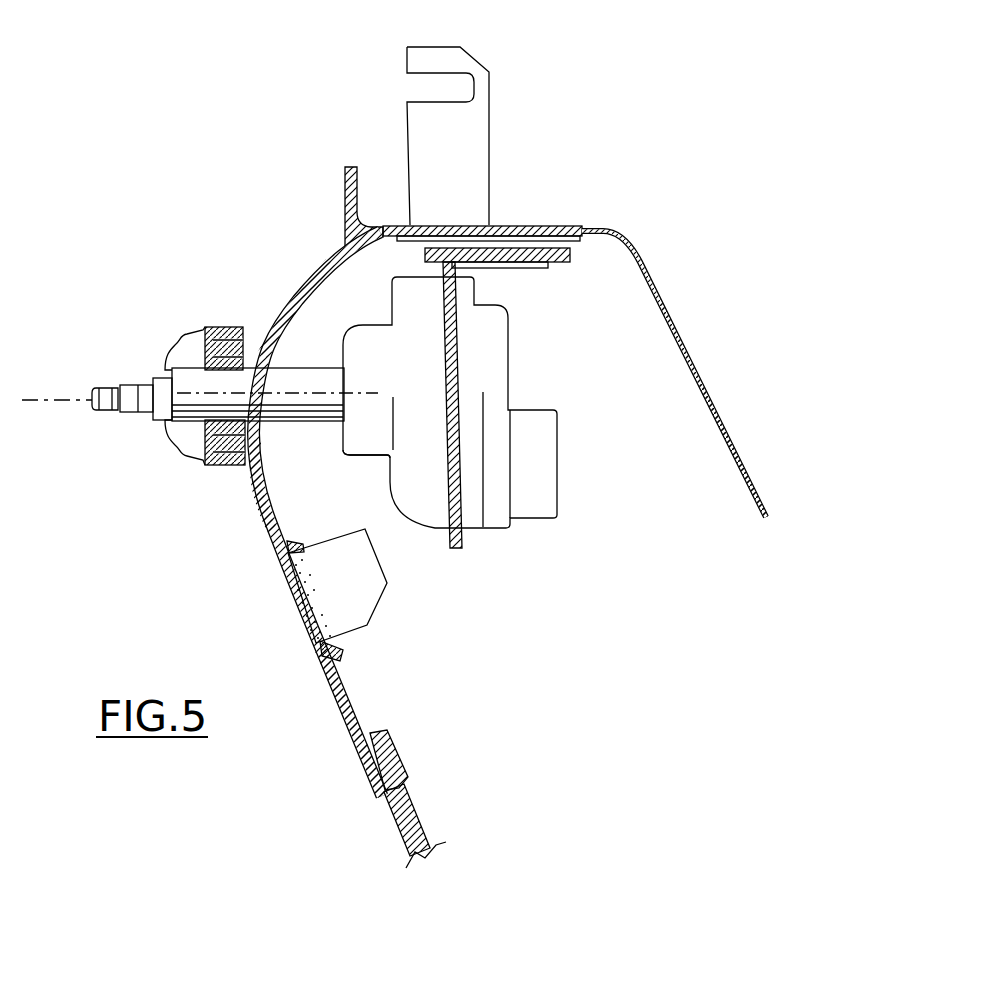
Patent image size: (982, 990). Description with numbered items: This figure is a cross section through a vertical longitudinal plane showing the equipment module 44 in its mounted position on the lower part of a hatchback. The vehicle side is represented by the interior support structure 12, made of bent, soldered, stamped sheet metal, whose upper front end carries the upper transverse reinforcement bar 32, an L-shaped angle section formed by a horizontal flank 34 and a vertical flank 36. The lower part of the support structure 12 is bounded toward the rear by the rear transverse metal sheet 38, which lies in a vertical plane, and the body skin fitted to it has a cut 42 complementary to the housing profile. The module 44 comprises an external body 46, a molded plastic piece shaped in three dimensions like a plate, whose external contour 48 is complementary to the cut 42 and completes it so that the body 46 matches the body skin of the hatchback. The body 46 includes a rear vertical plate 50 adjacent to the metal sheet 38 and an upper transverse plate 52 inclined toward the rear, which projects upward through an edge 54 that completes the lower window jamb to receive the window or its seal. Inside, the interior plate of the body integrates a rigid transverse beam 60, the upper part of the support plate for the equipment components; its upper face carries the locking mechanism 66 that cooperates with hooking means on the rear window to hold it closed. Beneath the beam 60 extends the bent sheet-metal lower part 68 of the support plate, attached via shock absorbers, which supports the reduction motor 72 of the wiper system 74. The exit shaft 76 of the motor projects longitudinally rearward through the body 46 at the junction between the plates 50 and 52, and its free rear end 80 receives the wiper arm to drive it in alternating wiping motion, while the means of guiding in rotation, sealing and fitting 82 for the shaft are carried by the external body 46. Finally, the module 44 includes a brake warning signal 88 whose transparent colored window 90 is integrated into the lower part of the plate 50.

The interior support structure 12 is at (729, 391).
The upper transverse reinforcement bar 32 is at (656, 281).
The horizontal flank 34 is at (583, 240).
The vertical flank 36 is at (673, 323).
The rear transverse metal sheet 38 is at (390, 740).
The cut 42 is at (378, 760).
The equipment module 44 is at (263, 522).
The external body 46 is at (278, 307).
The external contour 48 is at (385, 792).
The rear vertical plate 50 is at (338, 707).
The upper transverse plate 52 is at (328, 258).
The edge 54 is at (347, 187).
The transverse beam 60 is at (563, 222).
The locking mechanism 66 is at (493, 106).
The lower part 68 is at (507, 246).
The reduction motor 72 is at (519, 368).
The wiper system 74 is at (329, 453).
The exit shaft 76 is at (293, 382).
The free rear end 80 is at (135, 415).
The means of guiding in rotation, sealing and fitting 82 is at (205, 324).
The brake warning signal 88 is at (391, 600).
The transparent colored window 90 is at (291, 587).